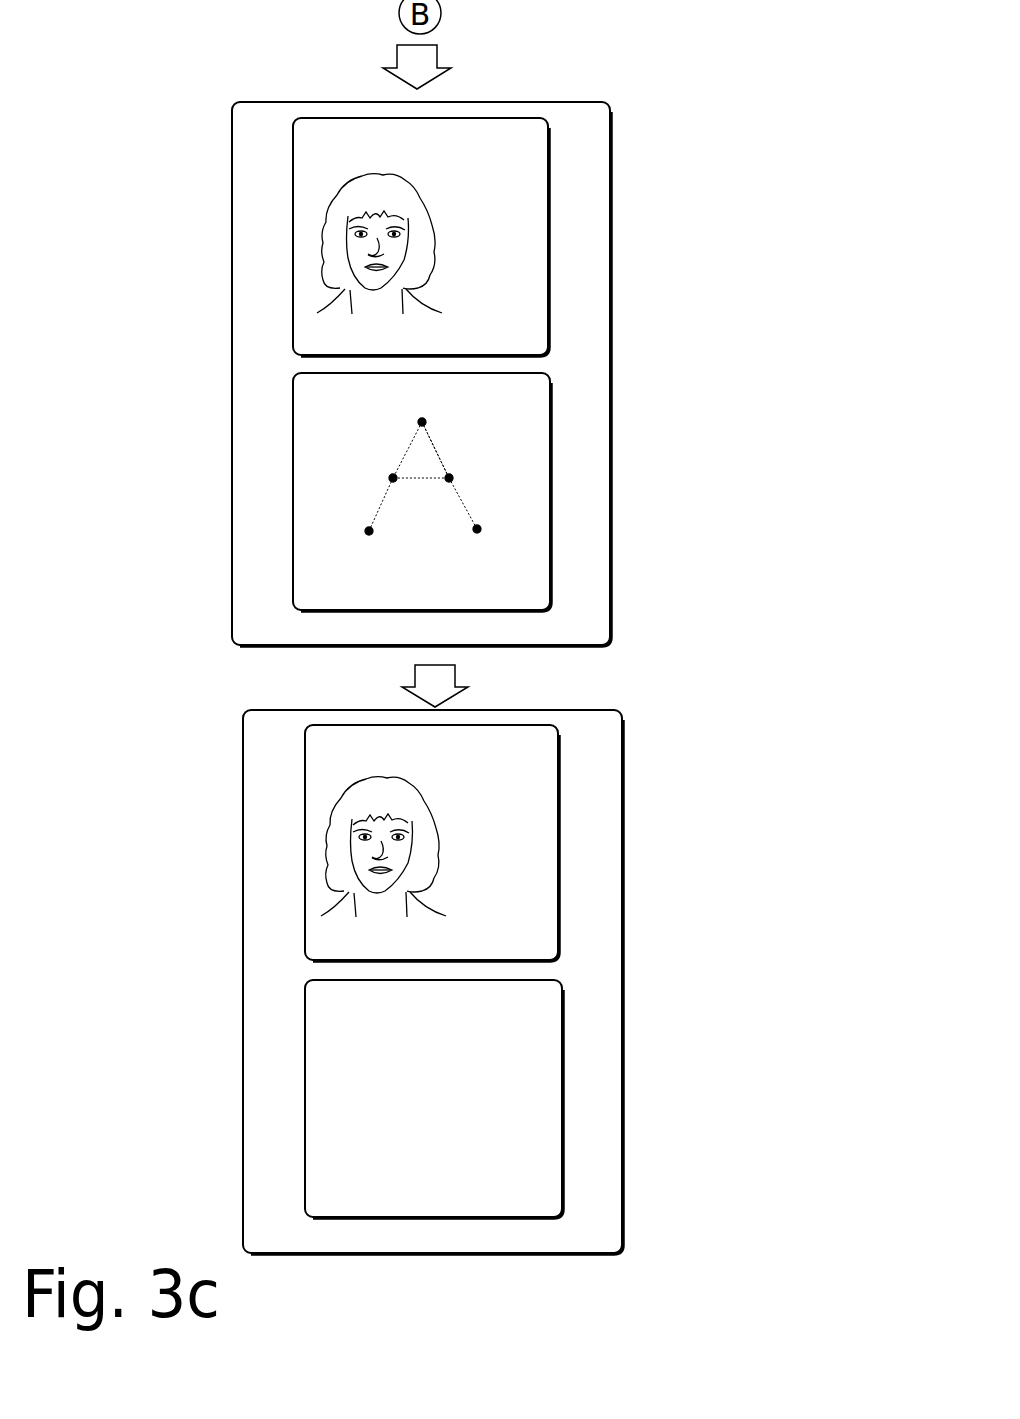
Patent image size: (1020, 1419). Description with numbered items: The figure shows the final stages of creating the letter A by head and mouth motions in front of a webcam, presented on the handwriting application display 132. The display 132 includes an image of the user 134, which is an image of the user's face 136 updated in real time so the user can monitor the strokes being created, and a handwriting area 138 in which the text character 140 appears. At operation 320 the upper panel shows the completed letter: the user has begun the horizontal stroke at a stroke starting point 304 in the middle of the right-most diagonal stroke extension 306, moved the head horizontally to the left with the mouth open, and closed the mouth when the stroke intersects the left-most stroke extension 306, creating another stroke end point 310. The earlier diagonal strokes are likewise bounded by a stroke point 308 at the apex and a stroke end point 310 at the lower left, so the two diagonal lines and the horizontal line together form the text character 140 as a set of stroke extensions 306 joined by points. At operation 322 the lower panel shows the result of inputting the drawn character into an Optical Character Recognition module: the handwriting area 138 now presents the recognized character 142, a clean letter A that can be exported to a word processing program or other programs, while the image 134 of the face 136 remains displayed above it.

The handwriting application display 132 is at (613, 146).
The image of the user 134 is at (550, 232).
The user's face 136 is at (490, 281).
The handwriting area 138 is at (554, 487).
The text character 140 is at (485, 580).
The character 142 is at (470, 1129).
The stroke starting point 304 is at (484, 480).
The stroke extension 306 is at (350, 436).
The stroke point 308 is at (478, 523).
The stroke end point 310 is at (350, 468).
The operation 320 is at (148, 363).
The operation 322 is at (165, 979).